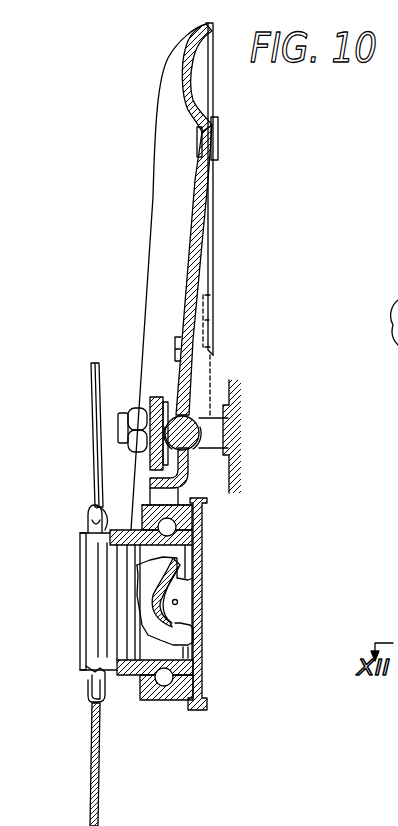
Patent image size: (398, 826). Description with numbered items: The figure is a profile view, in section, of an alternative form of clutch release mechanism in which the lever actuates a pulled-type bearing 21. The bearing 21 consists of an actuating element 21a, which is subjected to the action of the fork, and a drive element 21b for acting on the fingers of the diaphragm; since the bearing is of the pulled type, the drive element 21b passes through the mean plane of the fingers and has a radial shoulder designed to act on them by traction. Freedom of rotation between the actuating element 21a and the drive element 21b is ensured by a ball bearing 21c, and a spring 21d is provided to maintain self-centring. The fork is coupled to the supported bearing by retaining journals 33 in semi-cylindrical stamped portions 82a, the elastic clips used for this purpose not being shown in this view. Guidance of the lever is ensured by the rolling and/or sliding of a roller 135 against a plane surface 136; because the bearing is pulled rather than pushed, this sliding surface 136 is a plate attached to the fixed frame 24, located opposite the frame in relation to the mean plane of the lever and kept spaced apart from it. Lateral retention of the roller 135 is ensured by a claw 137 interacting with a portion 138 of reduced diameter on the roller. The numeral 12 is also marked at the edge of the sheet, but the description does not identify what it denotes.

The claw 137 is at (163, 356).
The plane surface 136 is at (178, 398).
The roller 135 is at (187, 417).
The fixed frame 24 is at (237, 440).
The portion of reduced diameter 138 is at (179, 452).
The spring 21d is at (194, 512).
The bearing 21 is at (155, 708).
The semi-cylindrical stamped portion 82a is at (167, 600).
The journal 33 is at (180, 597).
The drive element 21b is at (77, 667).
The ball bearing 21c is at (140, 702).
The actuating element 21a is at (202, 677).
The seat frame 12 is at (393, 263).